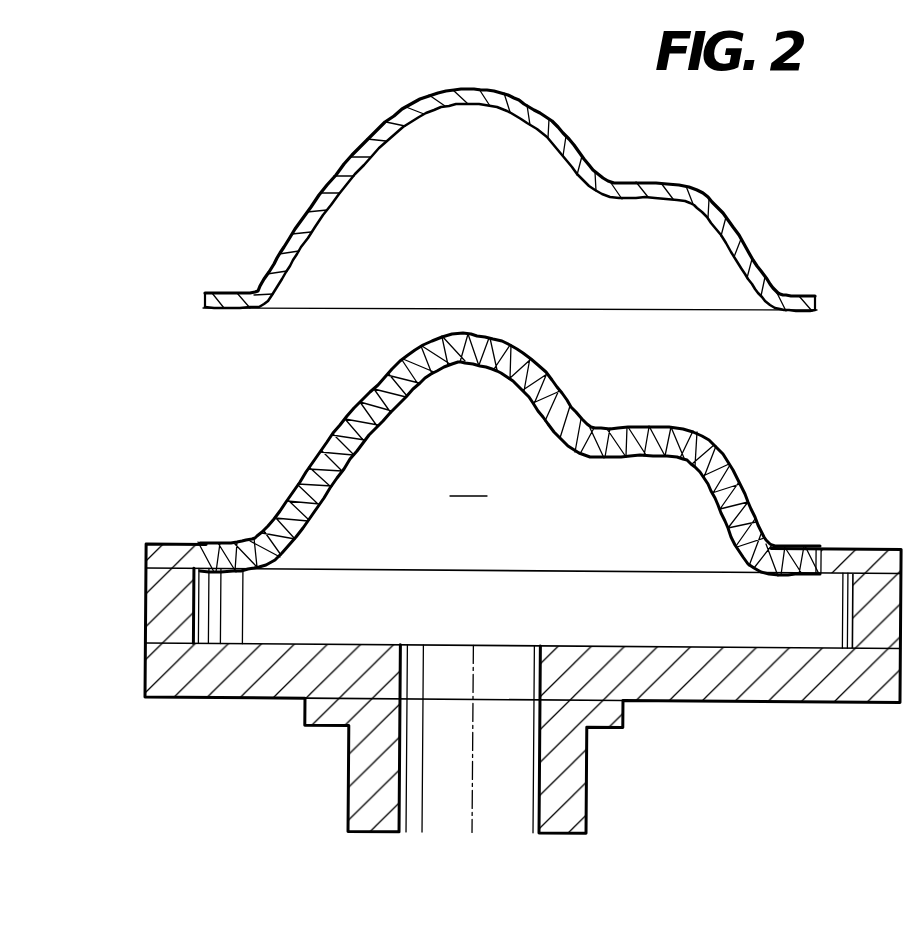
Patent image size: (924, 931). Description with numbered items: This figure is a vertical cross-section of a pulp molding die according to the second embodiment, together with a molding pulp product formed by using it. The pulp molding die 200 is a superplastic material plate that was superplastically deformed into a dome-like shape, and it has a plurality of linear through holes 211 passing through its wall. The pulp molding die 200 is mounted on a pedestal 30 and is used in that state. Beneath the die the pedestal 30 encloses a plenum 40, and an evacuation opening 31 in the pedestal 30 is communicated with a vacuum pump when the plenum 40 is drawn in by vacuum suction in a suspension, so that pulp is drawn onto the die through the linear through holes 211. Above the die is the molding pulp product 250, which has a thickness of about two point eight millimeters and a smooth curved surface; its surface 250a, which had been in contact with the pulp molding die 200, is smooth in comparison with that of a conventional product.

The molding pulp product 250 is at (417, 104).
The surface of the molding pulp product 250a is at (320, 217).
The linear through holes 211 is at (322, 445).
The plenum 40 is at (509, 454).
The pulp molding die 200 is at (157, 550).
The pedestal 30 is at (160, 643).
The evacuation opening 31 is at (405, 793).